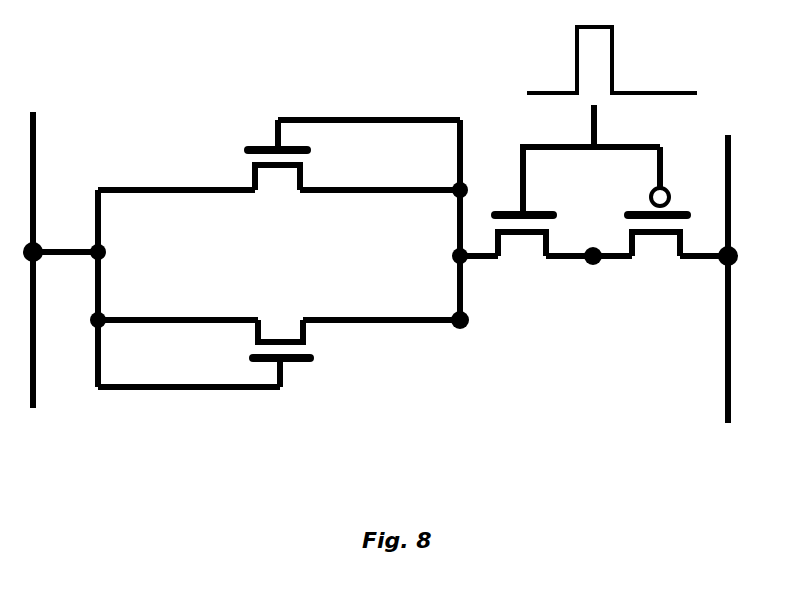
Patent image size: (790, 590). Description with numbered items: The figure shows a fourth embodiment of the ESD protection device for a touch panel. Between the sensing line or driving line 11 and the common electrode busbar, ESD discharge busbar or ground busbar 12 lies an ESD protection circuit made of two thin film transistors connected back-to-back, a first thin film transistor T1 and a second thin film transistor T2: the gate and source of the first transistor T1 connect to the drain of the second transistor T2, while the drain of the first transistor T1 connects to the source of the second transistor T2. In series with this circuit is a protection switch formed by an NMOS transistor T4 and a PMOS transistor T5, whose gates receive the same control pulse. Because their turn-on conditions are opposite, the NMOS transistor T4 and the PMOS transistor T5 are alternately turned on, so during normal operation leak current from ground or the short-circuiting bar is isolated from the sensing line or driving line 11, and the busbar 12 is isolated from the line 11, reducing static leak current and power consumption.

The sensing line or driving line 11 is at (33, 246).
The common electrode busbar, ESD discharge busbar, or ground busbar 12 is at (734, 262).
The first thin film transistor T1 is at (270, 155).
The second thin film transistor T2 is at (287, 360).
The NMOS transistor T4 is at (524, 252).
The PMOS transistor T5 is at (657, 239).